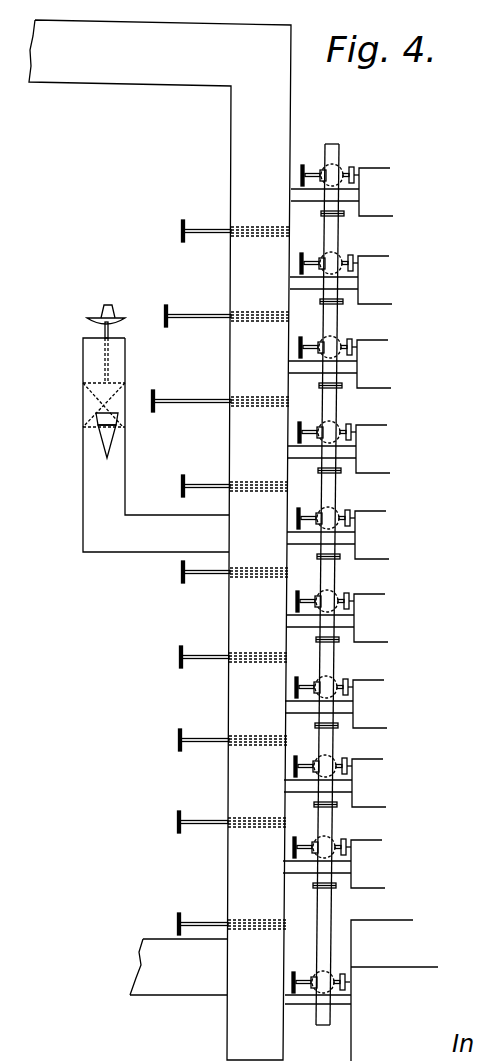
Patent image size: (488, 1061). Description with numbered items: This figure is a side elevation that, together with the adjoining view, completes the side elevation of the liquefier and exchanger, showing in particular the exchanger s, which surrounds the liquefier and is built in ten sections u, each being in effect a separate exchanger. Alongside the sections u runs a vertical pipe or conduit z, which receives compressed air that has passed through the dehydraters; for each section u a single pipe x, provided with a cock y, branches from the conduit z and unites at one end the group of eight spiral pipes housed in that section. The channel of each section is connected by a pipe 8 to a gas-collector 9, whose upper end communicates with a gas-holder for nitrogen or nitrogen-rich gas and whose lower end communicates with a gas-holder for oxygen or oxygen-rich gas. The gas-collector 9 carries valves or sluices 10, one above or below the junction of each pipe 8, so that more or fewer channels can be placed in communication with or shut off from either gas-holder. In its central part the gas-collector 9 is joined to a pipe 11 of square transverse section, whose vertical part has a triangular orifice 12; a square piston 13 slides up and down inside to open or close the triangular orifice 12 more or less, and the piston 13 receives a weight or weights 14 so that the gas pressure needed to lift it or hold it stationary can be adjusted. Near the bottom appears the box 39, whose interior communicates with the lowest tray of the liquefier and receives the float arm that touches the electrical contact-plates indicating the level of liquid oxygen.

The pipe 8 is at (321, 610).
The gas-collector 9 is at (160, 540).
The valves or sluices 10 is at (221, 577).
The pipe 11 is at (156, 666).
The triangular orifice 12 is at (104, 446).
The square piston 13 is at (100, 420).
The weight or weights 14 is at (111, 338).
The box 39 is at (394, 990).
The exchanger s is at (396, 165).
The sections u is at (372, 598).
The single pipe x is at (346, 571).
The cock y is at (309, 573).
The vertical pipe or conduit z is at (321, 578).